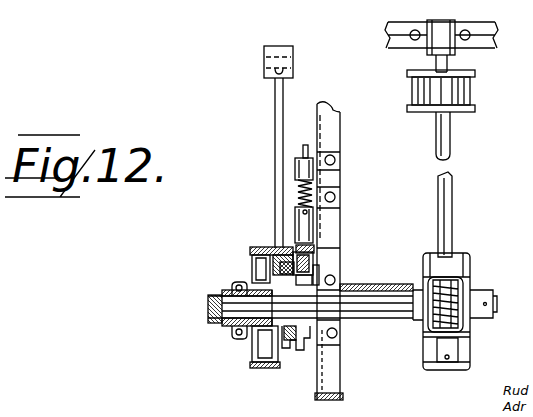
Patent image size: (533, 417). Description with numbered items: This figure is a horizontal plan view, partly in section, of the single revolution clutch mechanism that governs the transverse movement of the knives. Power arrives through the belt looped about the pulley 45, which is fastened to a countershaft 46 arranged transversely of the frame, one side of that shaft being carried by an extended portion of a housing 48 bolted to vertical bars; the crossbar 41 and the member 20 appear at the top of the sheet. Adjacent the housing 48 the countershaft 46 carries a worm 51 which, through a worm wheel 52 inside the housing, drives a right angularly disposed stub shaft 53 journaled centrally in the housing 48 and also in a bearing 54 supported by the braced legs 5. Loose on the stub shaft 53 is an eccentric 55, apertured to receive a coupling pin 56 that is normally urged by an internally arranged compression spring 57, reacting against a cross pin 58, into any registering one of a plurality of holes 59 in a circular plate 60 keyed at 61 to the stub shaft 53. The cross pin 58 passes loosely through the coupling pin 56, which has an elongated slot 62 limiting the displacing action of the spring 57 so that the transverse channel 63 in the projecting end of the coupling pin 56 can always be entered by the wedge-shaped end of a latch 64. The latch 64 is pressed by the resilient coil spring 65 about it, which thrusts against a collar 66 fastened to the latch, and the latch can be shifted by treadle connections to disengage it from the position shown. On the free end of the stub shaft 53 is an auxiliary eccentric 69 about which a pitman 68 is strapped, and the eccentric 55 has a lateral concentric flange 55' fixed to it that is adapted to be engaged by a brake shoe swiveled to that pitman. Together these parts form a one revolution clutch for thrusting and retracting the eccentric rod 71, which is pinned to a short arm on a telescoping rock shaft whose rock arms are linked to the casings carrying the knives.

The braced legs 5 is at (335, 392).
The frame member 20 is at (351, 3).
The bar 41 is at (461, 22).
The pulley 45 is at (447, 92).
The countershaft 46 is at (452, 140).
The housing 48 is at (468, 345).
The worm 51 is at (460, 295).
The worm wheel 52 is at (455, 250).
The stub shaft 53 is at (398, 313).
The bearing 54 is at (348, 286).
The eccentric 55 is at (296, 350).
The lateral concentric flange 55' is at (255, 382).
The coupling pin 56 is at (318, 263).
The compression spring 57 is at (272, 262).
The cross pin 58 is at (281, 262).
The holes 59 is at (258, 262).
The circular plate 60 is at (265, 345).
The key 61 is at (258, 280).
The elongated slot 62 is at (300, 252).
The transverse channel 63 is at (306, 260).
The latch 64 is at (325, 273).
The coil spring 65 is at (298, 187).
The collar 66 is at (308, 213).
The pitman 68 is at (232, 288).
The auxiliary eccentric 69 is at (232, 332).
The eccentric rod 71 is at (275, 110).